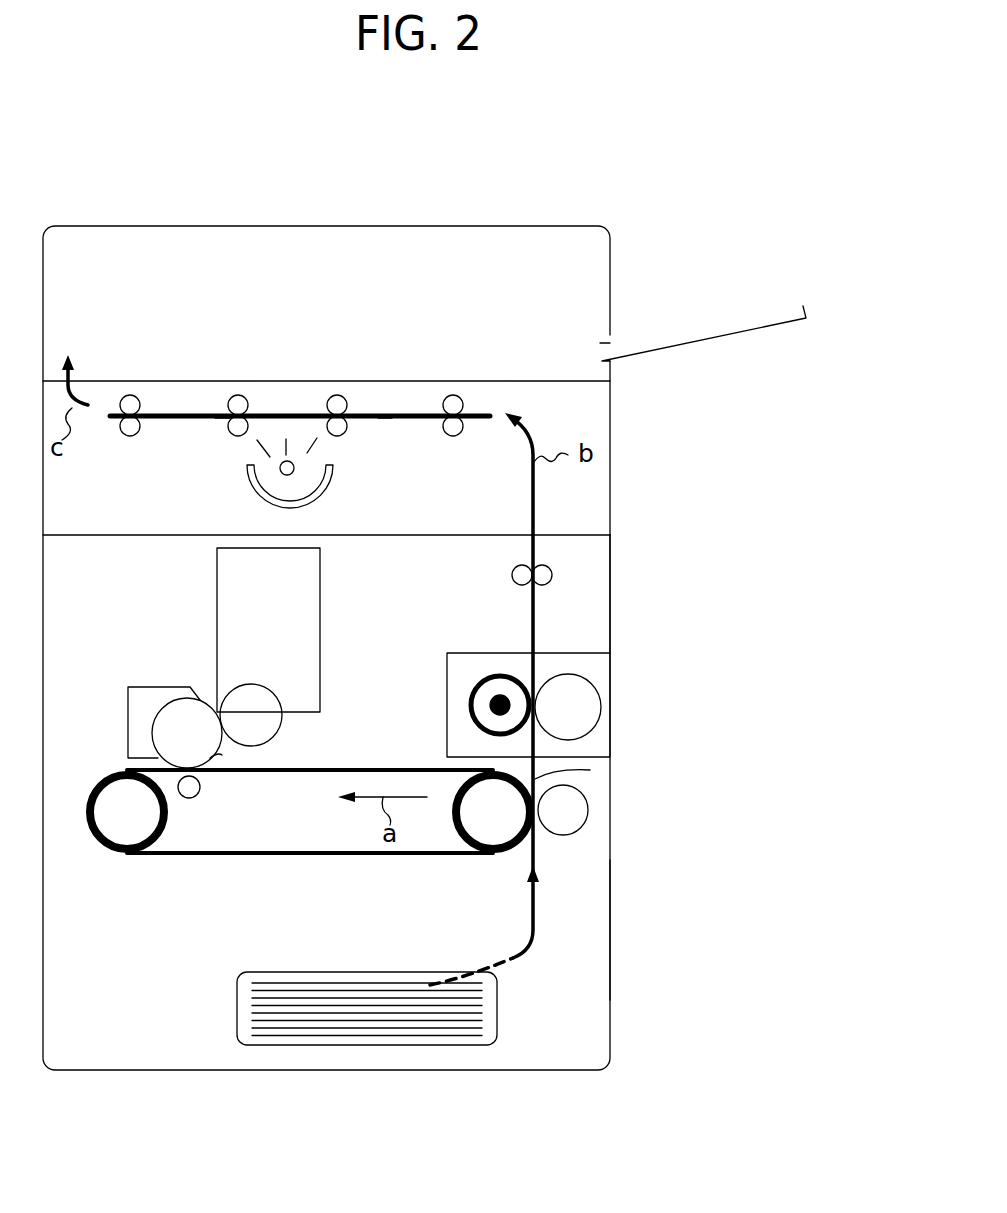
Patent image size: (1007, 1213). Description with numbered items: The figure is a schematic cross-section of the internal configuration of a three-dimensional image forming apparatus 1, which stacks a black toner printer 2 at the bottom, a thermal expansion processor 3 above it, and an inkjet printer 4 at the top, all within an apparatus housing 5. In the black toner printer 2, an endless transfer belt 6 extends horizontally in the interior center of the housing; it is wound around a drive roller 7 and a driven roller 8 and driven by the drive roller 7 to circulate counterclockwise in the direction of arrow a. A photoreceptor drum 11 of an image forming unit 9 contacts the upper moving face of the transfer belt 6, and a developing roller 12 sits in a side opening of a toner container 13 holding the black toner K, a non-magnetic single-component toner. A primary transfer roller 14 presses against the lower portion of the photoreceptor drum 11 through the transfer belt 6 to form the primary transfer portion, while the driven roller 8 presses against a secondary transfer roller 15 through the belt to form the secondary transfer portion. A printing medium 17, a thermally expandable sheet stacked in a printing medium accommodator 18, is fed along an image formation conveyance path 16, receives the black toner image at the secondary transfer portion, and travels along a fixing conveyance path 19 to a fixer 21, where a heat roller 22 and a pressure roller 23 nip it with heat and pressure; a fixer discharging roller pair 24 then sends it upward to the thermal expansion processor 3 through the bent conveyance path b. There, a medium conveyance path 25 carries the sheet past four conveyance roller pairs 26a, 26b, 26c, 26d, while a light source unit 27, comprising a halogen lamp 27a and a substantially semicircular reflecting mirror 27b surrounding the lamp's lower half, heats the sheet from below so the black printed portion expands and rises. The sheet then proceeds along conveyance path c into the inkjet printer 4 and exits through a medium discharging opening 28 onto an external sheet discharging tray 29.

The three-dimensional image forming apparatus 1 is at (692, 297).
The black toner printer 2 is at (618, 902).
The thermal expansion processor 3 is at (616, 460).
The inkjet printer 4 is at (614, 256).
The apparatus housing 5 is at (611, 598).
The transfer belt 6 is at (365, 768).
The drive roller 7 is at (148, 856).
The driven roller 8 is at (473, 857).
The image forming unit 9 is at (204, 637).
The photoreceptor drum 11 is at (222, 755).
The developing roller 12 is at (280, 720).
The toner container 13 is at (320, 590).
The primary transfer roller 14 is at (200, 795).
The secondary transfer roller 15 is at (588, 813).
The image formation conveyance path 16 is at (537, 925).
The printing medium 17 is at (397, 412).
The printing medium accommodator 18 is at (498, 990).
The fixing conveyance path 19 is at (590, 770).
The fixer 21 is at (611, 688).
The heat roller 22 is at (500, 674).
The pressure roller 23 is at (575, 674).
The fixer discharging roller pair 24 is at (512, 578).
The medium conveyance path 25 is at (215, 418).
The first conveyance roller pair 26a is at (460, 398).
The conveyance roller pair 26b is at (345, 400).
The conveyance roller pair 26c is at (248, 400).
The conveyance roller pair 26d is at (140, 408).
The light source unit 27 is at (214, 482).
The halogen lamp 27a is at (252, 472).
The reflecting mirror 27b is at (250, 490).
The medium discharging opening 28 is at (610, 343).
The sheet discharging tray 29 is at (752, 329).